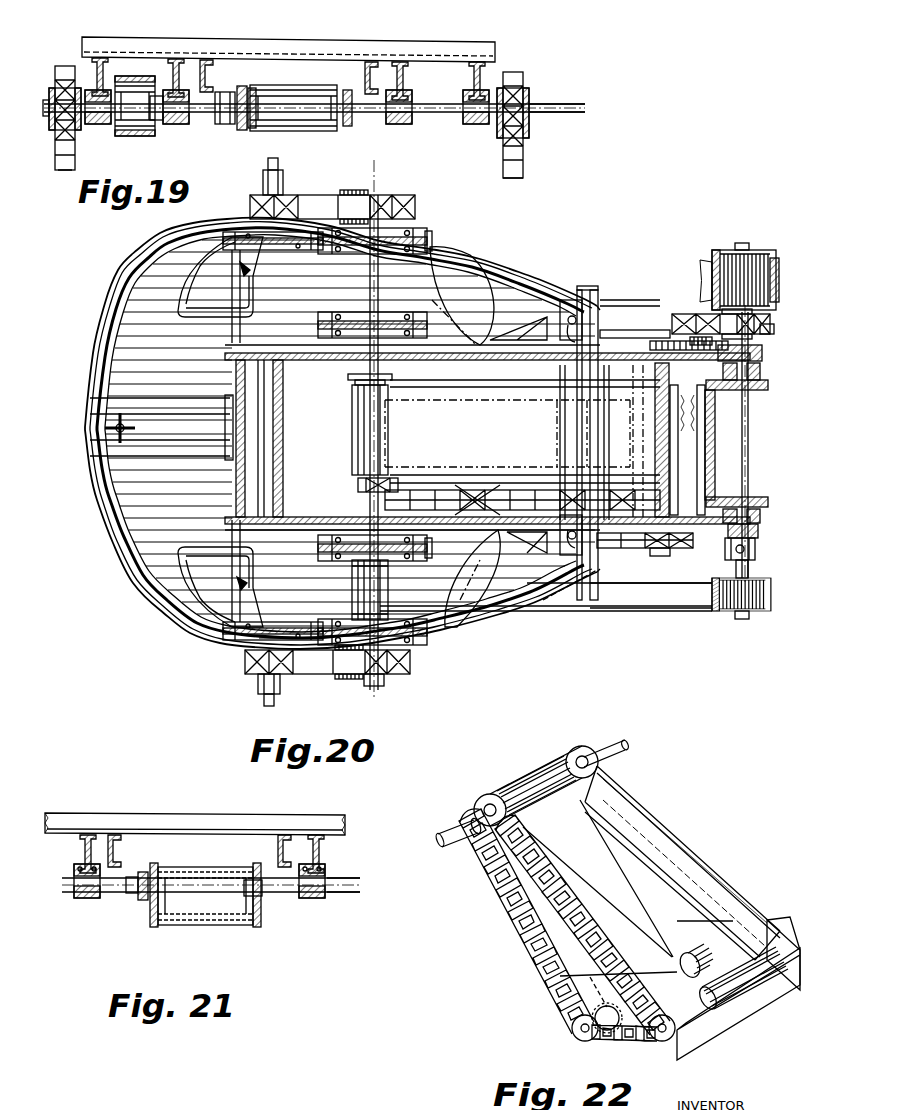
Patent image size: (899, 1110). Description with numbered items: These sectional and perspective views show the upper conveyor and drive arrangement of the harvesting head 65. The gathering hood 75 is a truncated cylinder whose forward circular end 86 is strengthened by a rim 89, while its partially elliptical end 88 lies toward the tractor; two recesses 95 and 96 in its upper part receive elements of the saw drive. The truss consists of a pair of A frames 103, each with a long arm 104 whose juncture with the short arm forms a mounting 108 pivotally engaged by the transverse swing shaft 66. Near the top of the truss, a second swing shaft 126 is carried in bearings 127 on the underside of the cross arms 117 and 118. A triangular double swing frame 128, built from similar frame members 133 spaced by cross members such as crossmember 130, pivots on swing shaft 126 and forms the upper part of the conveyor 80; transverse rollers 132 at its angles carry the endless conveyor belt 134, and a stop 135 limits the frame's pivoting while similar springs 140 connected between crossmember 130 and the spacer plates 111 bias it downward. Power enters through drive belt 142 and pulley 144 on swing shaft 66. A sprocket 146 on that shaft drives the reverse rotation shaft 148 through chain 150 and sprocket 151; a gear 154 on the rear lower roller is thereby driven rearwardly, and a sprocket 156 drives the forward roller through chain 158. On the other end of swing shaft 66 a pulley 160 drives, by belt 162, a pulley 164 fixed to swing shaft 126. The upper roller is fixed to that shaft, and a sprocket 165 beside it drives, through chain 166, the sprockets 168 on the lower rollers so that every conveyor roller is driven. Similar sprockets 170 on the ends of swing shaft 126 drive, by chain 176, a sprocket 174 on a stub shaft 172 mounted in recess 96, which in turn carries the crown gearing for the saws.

In FIG. 20, the harvesting head 65 is at (138, 508).
In FIG. 20, the swing shaft 66 is at (752, 244).
In FIG. 20, the gathering hood 75 is at (533, 272).
In FIG. 20, the conveyor 80 is at (392, 453).
In FIG. 20, the circular end 86 is at (98, 393).
In FIG. 20, the partially elliptical end 88 is at (507, 235).
In FIG. 20, the rim 89 is at (153, 258).
In FIG. 20, the recess 95 is at (218, 268).
In FIG. 20, the recess 96 is at (218, 592).
In FIG. 19, the A frame 103 is at (347, 126).
In FIG. 20, the A frame 103 is at (336, 360).
In FIG. 19, the long arm 104 is at (206, 72).
In FIG. 20, the long arm 104 is at (613, 350).
In FIG. 21, the long arm 104 is at (121, 845).
In FIG. 20, the mounting 108 is at (758, 530).
In FIG. 20, the spacer plate 111 is at (584, 286).
In FIG. 21, the cross arm 117 is at (252, 822).
In FIG. 19, the cross arm 118 is at (330, 44).
In FIG. 19, the swing shaft 126 is at (536, 108).
In FIG. 20, the swing shaft 126 is at (370, 688).
In FIG. 21, the swing shaft 126 is at (340, 890).
In FIG. 22, the swing shaft 126 is at (622, 742).
In FIG. 19, the bearing 127 is at (97, 124).
In FIG. 20, the bearing 127 is at (418, 236).
In FIG. 21, the bearing 127 is at (88, 900).
In FIG. 20, the double swing frame 128 is at (518, 378).
In FIG. 22, the double swing frame 128 is at (657, 830).
In FIG. 20, the crossmember 130 is at (600, 328).
In FIG. 19, the roller 132 is at (268, 100).
In FIG. 20, the roller 132 is at (354, 385).
In FIG. 22, the roller 132 is at (552, 775).
In FIG. 21, the double frame member 133 is at (160, 868).
In FIG. 22, the double frame member 133 is at (573, 880).
In FIG. 19, the conveyor belt 134 is at (306, 128).
In FIG. 20, the conveyor belt 134 is at (385, 418).
In FIG. 21, the conveyor belt 134 is at (225, 924).
In FIG. 20, the stop 135 is at (702, 455).
In FIG. 22, the stop 135 is at (706, 1052).
In FIG. 20, the spring 140 is at (585, 333).
In FIG. 20, the drive belt 142 is at (780, 265).
In FIG. 20, the pulley 144 is at (718, 250).
In FIG. 20, the sprocket 146 is at (770, 331).
In FIG. 20, the reverse rotation shaft 148 is at (712, 308).
In FIG. 20, the chain 150 is at (673, 318).
In FIG. 20, the sprocket 151 is at (697, 310).
In FIG. 20, the gear 154 is at (662, 344).
In FIG. 20, the sprocket 156 is at (662, 550).
In FIG. 20, the chain 158 is at (645, 546).
In FIG. 20, the pulley 160 is at (746, 623).
In FIG. 19, the belt 162 is at (135, 138).
In FIG. 20, the belt 162 is at (679, 606).
In FIG. 19, the pulley 164 is at (153, 137).
In FIG. 20, the pulley 164 is at (392, 578).
In FIG. 19, the sprocket 165 is at (218, 124).
In FIG. 20, the sprocket 165 is at (365, 510).
In FIG. 21, the sprocket 165 is at (132, 892).
In FIG. 22, the sprocket 165 is at (456, 830).
In FIG. 19, the chain 166 is at (238, 130).
In FIG. 20, the chain 166 is at (458, 493).
In FIG. 21, the chain 166 is at (137, 905).
In FIG. 22, the chain 166 is at (528, 957).
In FIG. 22, the sprocket 168 is at (578, 1040).
In FIG. 19, the sprocket 170 is at (60, 82).
In FIG. 20, the sprocket 170 is at (400, 198).
In FIG. 20, the stub shaft 172 is at (281, 174).
In FIG. 20, the sprocket 174 is at (286, 188).
In FIG. 19, the chain 176 is at (56, 142).
In FIG. 20, the chain 176 is at (310, 674).